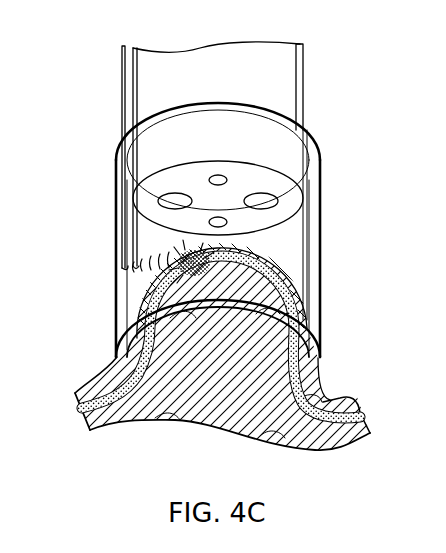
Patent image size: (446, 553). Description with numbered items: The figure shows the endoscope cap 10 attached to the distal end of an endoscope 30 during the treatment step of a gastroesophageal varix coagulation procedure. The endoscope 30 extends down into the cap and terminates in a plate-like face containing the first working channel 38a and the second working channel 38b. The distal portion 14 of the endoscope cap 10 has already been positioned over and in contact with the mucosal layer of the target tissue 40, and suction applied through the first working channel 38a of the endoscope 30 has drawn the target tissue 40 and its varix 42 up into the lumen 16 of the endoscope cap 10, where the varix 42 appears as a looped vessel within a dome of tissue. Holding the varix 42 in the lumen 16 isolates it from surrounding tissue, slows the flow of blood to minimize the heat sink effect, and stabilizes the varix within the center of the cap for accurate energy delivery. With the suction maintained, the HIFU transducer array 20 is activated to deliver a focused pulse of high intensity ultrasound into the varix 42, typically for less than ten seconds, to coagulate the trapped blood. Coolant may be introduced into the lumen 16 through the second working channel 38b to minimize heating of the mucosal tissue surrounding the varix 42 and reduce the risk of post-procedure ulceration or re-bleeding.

The endoscope cap 10 is at (107, 178).
The distal portion 14 is at (313, 293).
The lumen 16 is at (284, 243).
The HIFU transducer array 20 is at (127, 268).
The endoscope 30 is at (316, 82).
The first working channel 38a is at (169, 196).
The second working channel 38b is at (255, 198).
The target tissue 40 is at (210, 422).
The varix 42 is at (197, 255).